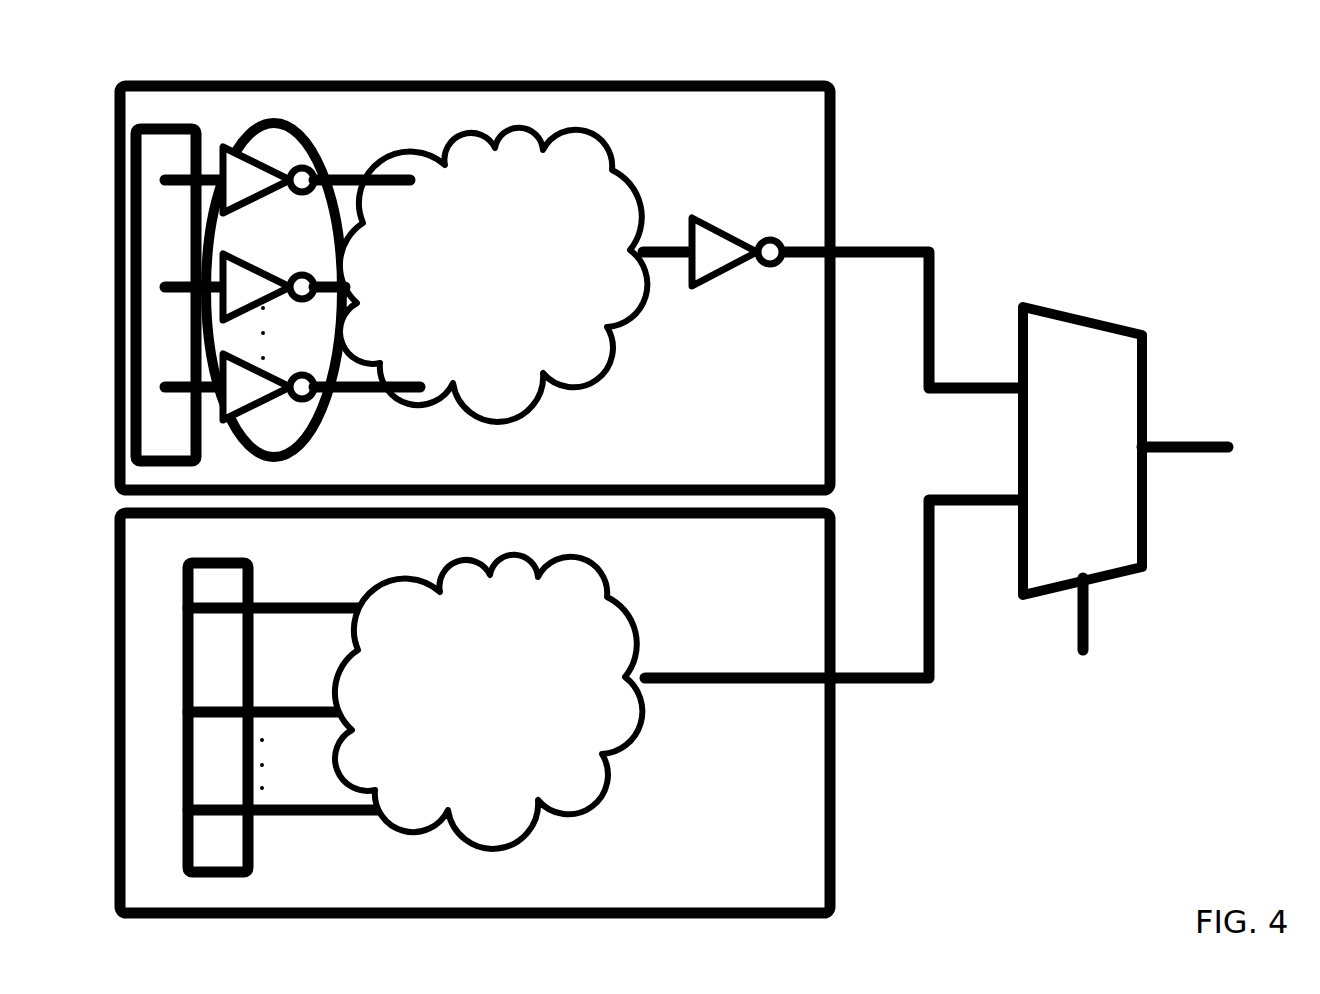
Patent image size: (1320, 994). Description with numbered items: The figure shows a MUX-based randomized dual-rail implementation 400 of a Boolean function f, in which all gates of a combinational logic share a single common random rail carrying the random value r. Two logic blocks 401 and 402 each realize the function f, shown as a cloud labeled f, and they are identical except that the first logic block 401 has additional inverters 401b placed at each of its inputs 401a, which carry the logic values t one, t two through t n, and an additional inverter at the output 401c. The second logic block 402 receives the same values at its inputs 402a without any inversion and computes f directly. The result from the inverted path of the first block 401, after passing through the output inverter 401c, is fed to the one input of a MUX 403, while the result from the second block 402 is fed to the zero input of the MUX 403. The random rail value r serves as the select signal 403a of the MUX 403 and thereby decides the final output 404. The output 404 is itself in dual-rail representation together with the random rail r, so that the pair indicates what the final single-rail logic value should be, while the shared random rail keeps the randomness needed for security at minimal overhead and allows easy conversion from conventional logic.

The randomized dual-rail implementation 400 is at (704, 463).
The first logic block 401 is at (475, 288).
The inputs 401a is at (179, 282).
The additional inverters 401b is at (274, 276).
The additional inverter at the output 401c is at (737, 240).
The second logic block 402 is at (475, 713).
The inputs 402a is at (294, 702).
The MUX 403 is at (1082, 498).
The select signal 403a is at (1100, 644).
The final output 404 is at (1215, 447).